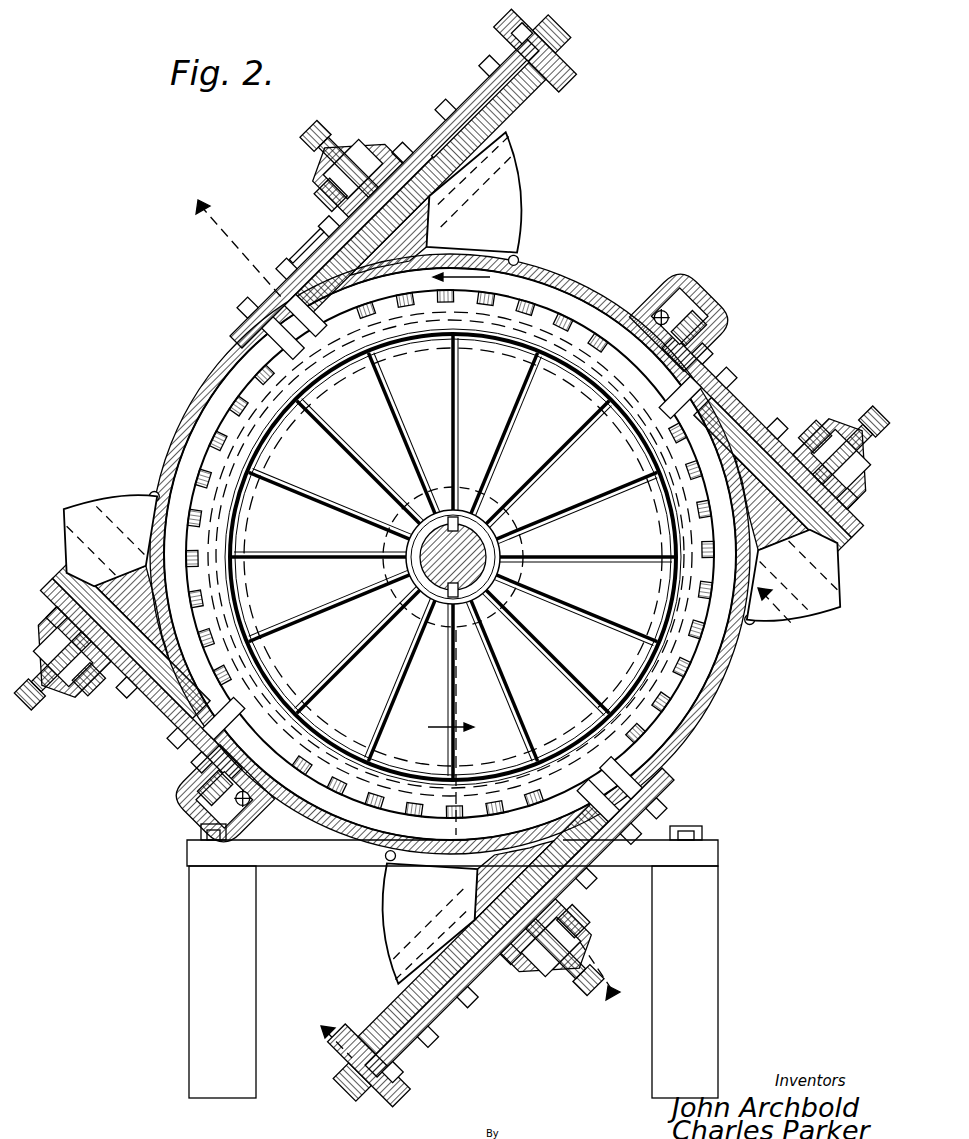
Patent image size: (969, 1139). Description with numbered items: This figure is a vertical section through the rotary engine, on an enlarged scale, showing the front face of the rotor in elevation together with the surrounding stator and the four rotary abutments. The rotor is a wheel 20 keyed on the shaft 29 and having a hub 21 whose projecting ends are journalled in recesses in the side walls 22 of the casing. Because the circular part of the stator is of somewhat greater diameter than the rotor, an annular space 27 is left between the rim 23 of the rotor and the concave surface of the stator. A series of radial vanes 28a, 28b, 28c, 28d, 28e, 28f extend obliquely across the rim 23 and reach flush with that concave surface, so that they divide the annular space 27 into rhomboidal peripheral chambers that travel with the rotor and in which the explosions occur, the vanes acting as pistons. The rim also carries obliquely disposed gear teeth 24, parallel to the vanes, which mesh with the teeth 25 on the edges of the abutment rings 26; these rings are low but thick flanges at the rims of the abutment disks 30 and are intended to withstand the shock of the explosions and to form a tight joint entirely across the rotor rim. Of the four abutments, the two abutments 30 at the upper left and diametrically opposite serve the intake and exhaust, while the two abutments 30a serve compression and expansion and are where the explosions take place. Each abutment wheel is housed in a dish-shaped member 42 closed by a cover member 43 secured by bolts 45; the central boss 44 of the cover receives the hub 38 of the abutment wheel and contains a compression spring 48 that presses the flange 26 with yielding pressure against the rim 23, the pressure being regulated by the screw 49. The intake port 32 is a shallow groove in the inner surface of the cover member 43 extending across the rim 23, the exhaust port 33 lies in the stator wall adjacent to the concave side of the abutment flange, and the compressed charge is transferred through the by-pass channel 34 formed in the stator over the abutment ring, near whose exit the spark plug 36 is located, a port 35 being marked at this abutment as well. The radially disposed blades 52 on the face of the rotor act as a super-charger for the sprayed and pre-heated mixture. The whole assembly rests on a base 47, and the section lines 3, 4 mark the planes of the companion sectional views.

The section line 3- 3 is at (406, 600).
The section line 4- 4 is at (551, 831).
The rotor wheel 20 is at (498, 373).
The hub 21 is at (398, 600).
The side walls 22 is at (192, 430).
The rim 23 is at (494, 320).
The gear teeth 24 is at (573, 300).
The gear teeth 25 is at (548, 118).
The abutment rings 26 is at (557, 64).
The annular space 27 is at (475, 265).
The radial vane 28a is at (216, 525).
The radial vane 28b is at (306, 768).
The radial vane 28c is at (560, 778).
The radial vane 28d is at (698, 575).
The radial vane 28e is at (600, 333).
The radial vane 28f is at (334, 322).
The shaft 29 is at (412, 568).
The abutment disks 30 is at (428, 130).
The compression and expansion abutments 30a is at (790, 422).
The intake port 32 is at (722, 765).
The exhaust port 33 is at (690, 810).
The by-pass channel 34 is at (683, 327).
The port 35 is at (735, 340).
The spark plug 36 is at (665, 315).
The hub of the abutment wheel 38 is at (352, 190).
The dish-shaped member 42 is at (518, 150).
The cover member 43 is at (303, 268).
The central boss 44 is at (353, 150).
The bolts 45 is at (280, 270).
The base 47 is at (700, 858).
The compression spring 48 is at (362, 172).
The screw 49 is at (322, 140).
The radially disposed blades 52 is at (380, 466).